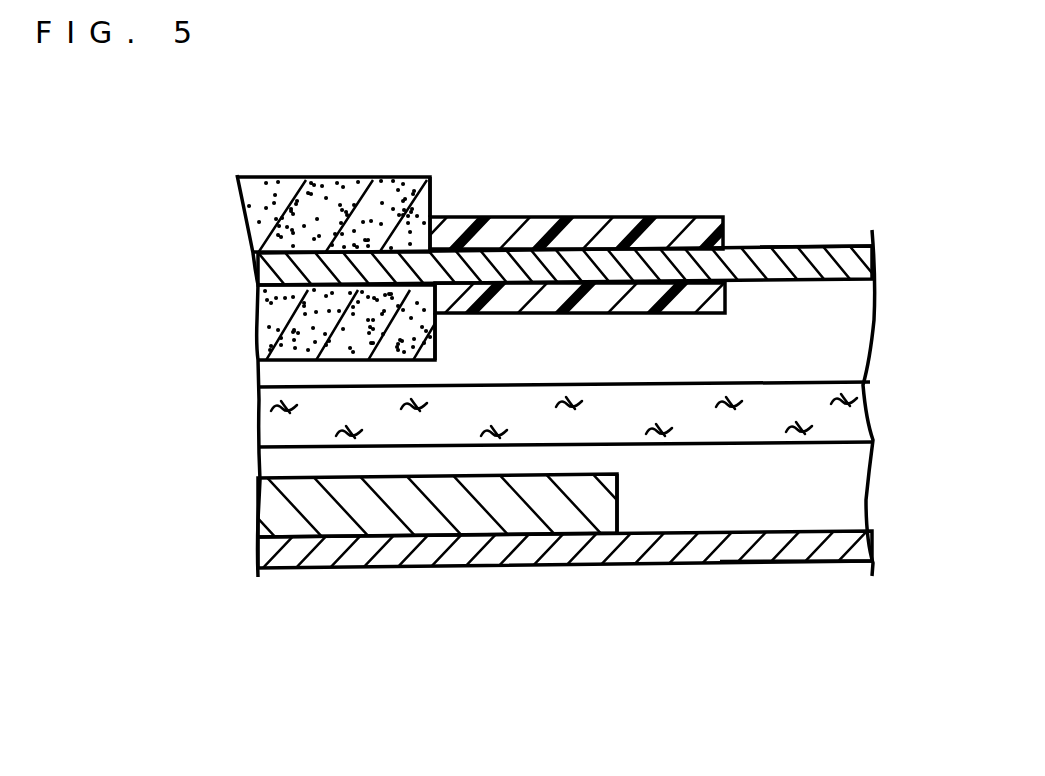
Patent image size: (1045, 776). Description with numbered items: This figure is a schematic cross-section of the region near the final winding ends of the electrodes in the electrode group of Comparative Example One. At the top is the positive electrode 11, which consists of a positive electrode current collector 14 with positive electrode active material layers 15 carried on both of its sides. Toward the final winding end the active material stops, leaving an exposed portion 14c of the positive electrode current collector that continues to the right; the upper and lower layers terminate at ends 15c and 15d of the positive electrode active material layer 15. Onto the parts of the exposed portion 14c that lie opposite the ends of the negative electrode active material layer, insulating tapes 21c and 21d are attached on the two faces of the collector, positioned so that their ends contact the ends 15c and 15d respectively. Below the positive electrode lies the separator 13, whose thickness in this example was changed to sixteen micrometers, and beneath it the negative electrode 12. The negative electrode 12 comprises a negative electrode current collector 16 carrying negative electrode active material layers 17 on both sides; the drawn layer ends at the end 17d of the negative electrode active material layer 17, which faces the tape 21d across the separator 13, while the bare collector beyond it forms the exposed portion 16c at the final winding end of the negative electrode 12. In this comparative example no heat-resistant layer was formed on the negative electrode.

The positive electrode 11 is at (428, 117).
The positive electrode current collector 14 is at (313, 268).
The exposed portion of the positive electrode current collector 14c is at (803, 270).
The positive electrode active material layer 15 is at (397, 312).
The end of the positive electrode active material layer 15c is at (430, 214).
The end of the positive electrode active material layer 15d is at (436, 338).
The insulating tape 21c is at (662, 237).
The insulating tape 21d is at (680, 293).
The separator 13 is at (812, 403).
The negative electrode 12 is at (457, 632).
The negative electrode active material layer 17 is at (340, 515).
The end of the negative electrode active material layer 17d is at (618, 497).
The negative electrode current collector 16 is at (417, 547).
The exposed portion of the negative electrode current collector 16c is at (767, 543).